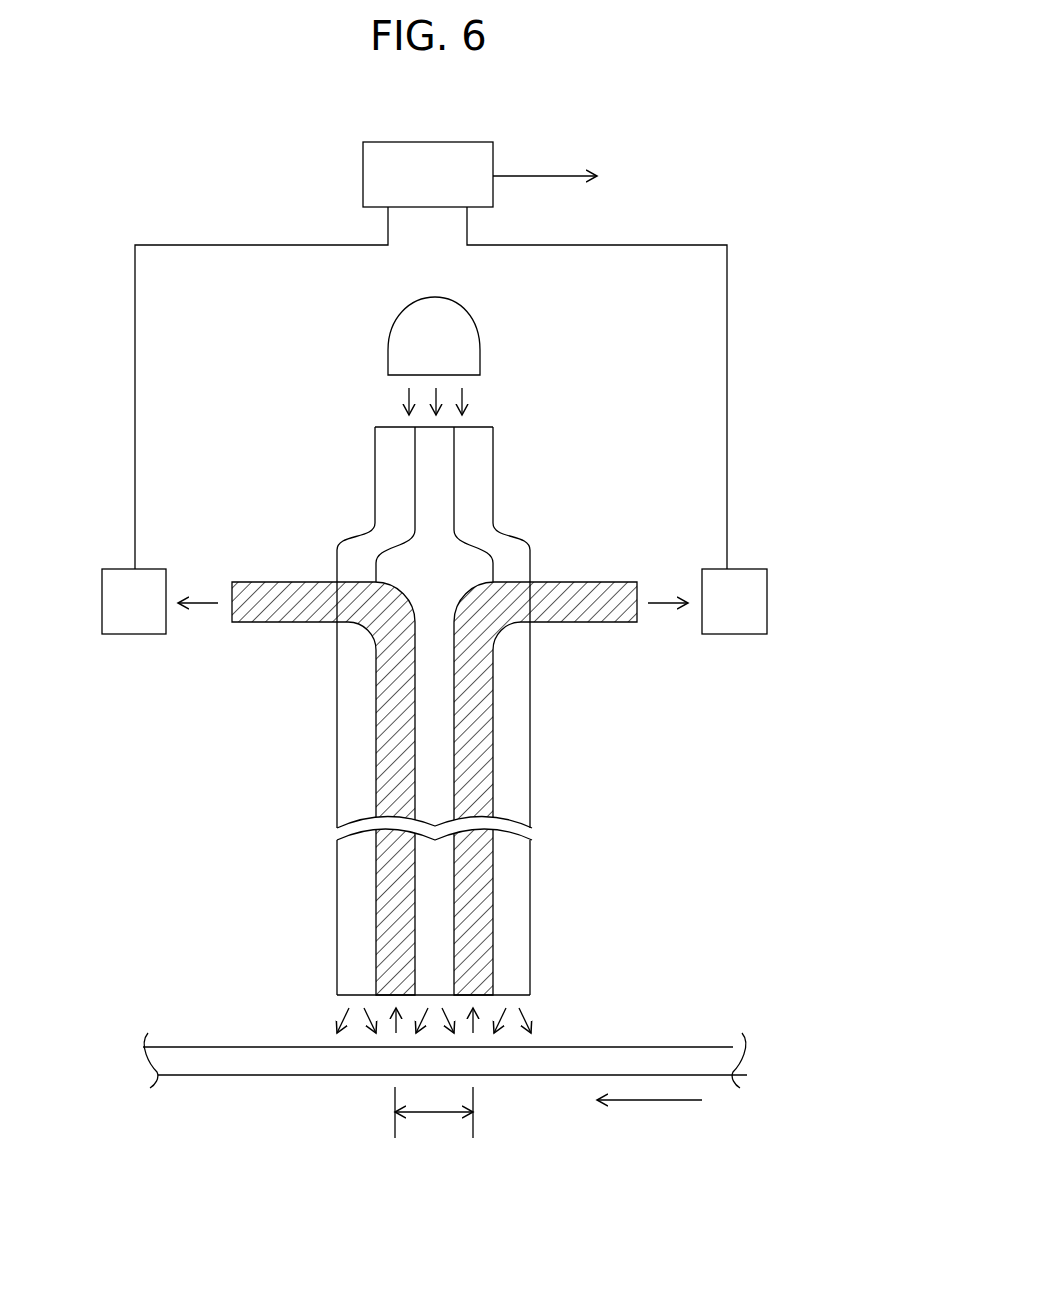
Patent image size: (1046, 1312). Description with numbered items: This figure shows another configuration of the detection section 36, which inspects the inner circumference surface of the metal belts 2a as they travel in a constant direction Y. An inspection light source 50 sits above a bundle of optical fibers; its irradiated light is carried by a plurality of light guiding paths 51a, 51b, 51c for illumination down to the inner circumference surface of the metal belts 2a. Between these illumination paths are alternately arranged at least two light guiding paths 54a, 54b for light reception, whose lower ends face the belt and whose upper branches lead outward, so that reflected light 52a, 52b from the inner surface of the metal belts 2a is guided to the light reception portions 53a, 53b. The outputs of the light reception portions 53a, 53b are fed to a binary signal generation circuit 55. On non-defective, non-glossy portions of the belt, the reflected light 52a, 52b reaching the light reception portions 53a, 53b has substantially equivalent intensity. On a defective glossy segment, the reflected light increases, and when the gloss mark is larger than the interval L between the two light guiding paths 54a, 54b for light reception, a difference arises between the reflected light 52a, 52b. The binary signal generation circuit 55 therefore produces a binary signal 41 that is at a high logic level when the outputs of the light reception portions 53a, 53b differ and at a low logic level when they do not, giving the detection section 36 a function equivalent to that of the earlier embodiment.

The detection section 36 is at (752, 268).
The binary signal generation circuit 55 is at (415, 142).
The binary signal 41 is at (530, 176).
The inspection light source 50 is at (470, 312).
The light guiding path for illumination 51a is at (388, 503).
The light guiding path for illumination 51b is at (440, 453).
The light guiding path for illumination 51c is at (478, 503).
The reflected light 52a is at (210, 600).
The reflected light 52b is at (658, 600).
The light reception portion 53a is at (118, 569).
The light reception portion 53b is at (737, 569).
The light guiding path for light reception 54a is at (298, 622).
The light guiding path for light reception 54b is at (570, 622).
The metal belt 2a is at (645, 1047).
The interval of the two light guiding paths for light reception L is at (430, 1112).
The constant direction Y is at (635, 1100).